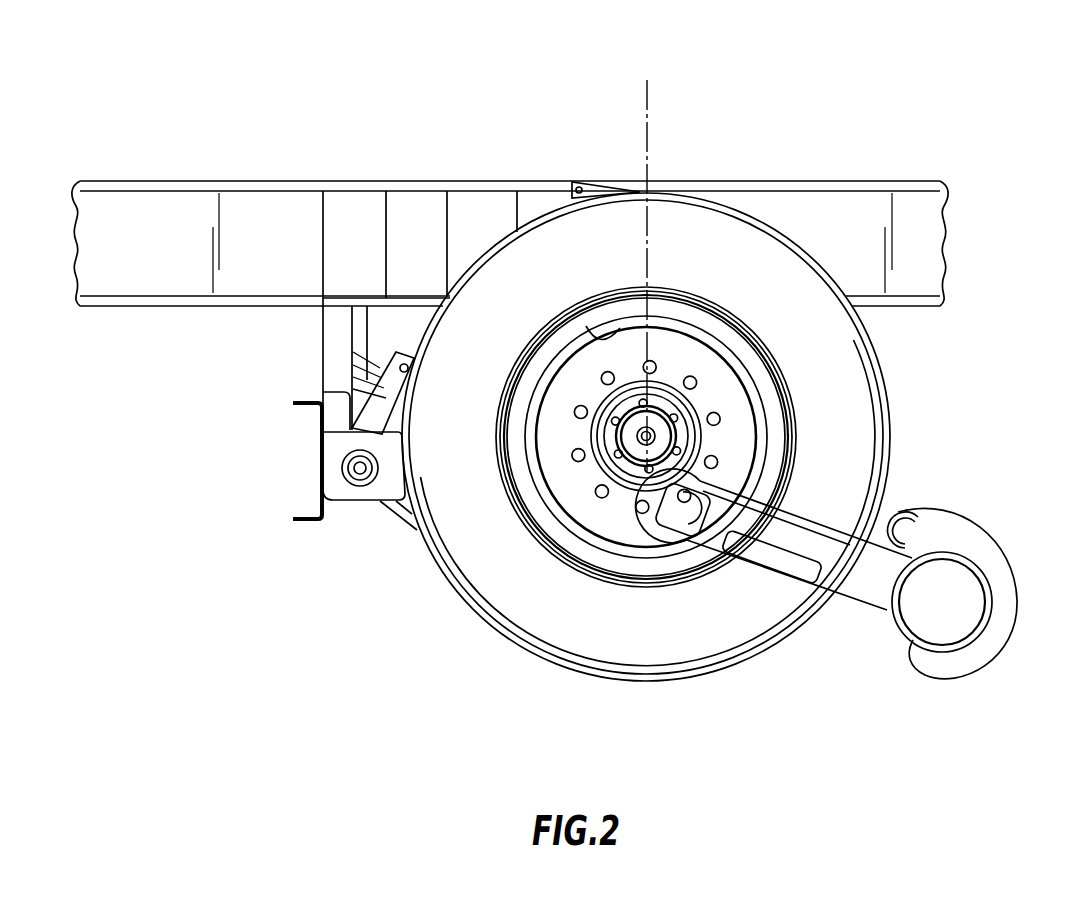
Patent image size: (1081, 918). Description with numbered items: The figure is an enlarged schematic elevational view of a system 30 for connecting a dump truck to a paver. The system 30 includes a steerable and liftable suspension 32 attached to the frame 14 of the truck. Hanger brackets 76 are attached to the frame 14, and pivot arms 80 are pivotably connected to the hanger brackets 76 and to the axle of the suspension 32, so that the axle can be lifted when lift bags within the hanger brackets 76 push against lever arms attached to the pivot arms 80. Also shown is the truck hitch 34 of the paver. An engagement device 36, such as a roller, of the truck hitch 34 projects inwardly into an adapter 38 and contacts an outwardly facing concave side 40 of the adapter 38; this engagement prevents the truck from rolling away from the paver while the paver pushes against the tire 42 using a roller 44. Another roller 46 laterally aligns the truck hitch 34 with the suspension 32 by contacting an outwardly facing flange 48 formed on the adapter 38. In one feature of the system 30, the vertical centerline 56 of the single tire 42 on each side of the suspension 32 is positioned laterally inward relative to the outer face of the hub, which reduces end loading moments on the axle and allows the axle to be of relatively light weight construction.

The system 30 is at (200, 100).
The frame 14 is at (323, 181).
The hanger brackets 76 is at (320, 347).
The pivot arms 80 is at (388, 512).
The suspension 32 is at (400, 555).
The vertical centerline 56 is at (649, 100).
The tire 42 is at (878, 343).
The adapter 38 is at (792, 387).
The concave side 40 is at (575, 511).
The flange 48 is at (614, 325).
The engagement device 36 is at (633, 517).
The roller 46 is at (790, 510).
The roller 44 is at (905, 512).
The truck hitch 34 is at (889, 636).